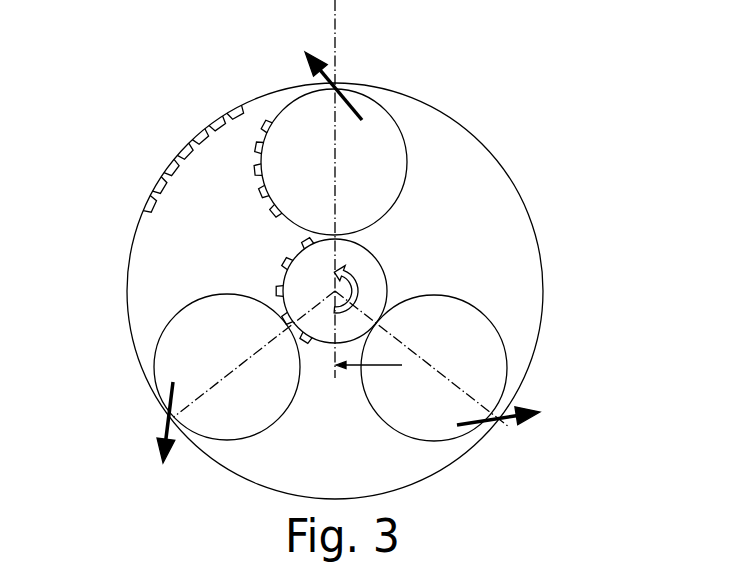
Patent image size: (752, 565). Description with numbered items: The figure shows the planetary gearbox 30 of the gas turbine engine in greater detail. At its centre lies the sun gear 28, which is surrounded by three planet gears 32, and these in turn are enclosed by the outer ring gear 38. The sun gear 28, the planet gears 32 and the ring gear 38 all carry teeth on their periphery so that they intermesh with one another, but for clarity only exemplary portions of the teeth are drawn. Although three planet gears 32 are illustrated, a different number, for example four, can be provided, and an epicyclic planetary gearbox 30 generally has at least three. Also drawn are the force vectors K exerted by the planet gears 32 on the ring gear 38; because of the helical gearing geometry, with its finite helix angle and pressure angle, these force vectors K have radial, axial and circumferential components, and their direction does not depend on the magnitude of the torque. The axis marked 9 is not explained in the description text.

The axis of rotation 9 is at (305, 274).
The sun gear 28 is at (386, 268).
The planetary gearbox 30 is at (527, 163).
The planet gears 32 is at (390, 113).
The ring gear 38 is at (140, 213).
The force vectors K is at (316, 82).